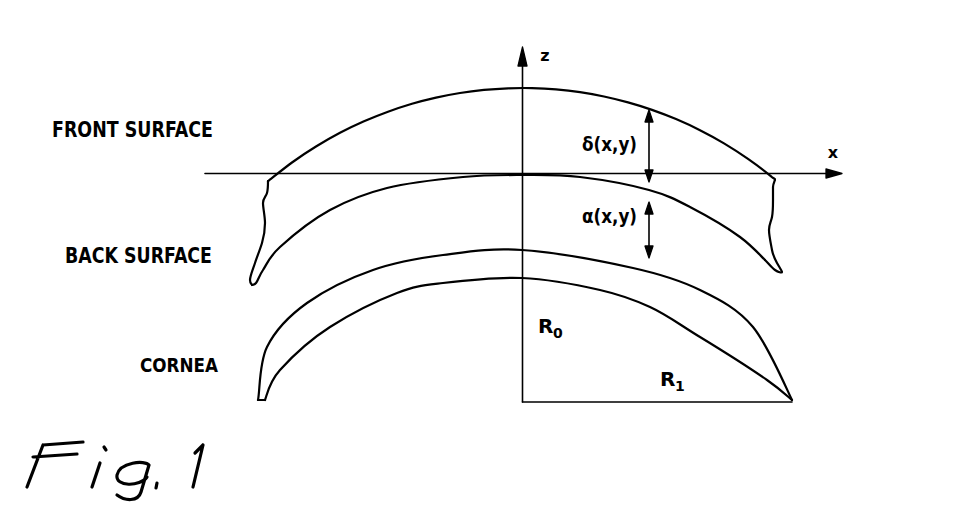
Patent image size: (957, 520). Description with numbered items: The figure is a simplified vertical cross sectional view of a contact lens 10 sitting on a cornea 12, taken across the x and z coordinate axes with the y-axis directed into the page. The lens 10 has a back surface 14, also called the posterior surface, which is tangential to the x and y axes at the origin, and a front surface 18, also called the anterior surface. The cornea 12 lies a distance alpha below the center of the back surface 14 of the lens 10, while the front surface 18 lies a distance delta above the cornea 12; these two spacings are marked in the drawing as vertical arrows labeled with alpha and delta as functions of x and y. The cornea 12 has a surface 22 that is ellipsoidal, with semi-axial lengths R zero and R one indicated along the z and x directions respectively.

The contact lens 10 is at (516, 187).
The cornea 12 is at (560, 229).
The back surface 14 is at (380, 203).
The front surface 18 is at (455, 92).
The surface 22 is at (467, 255).